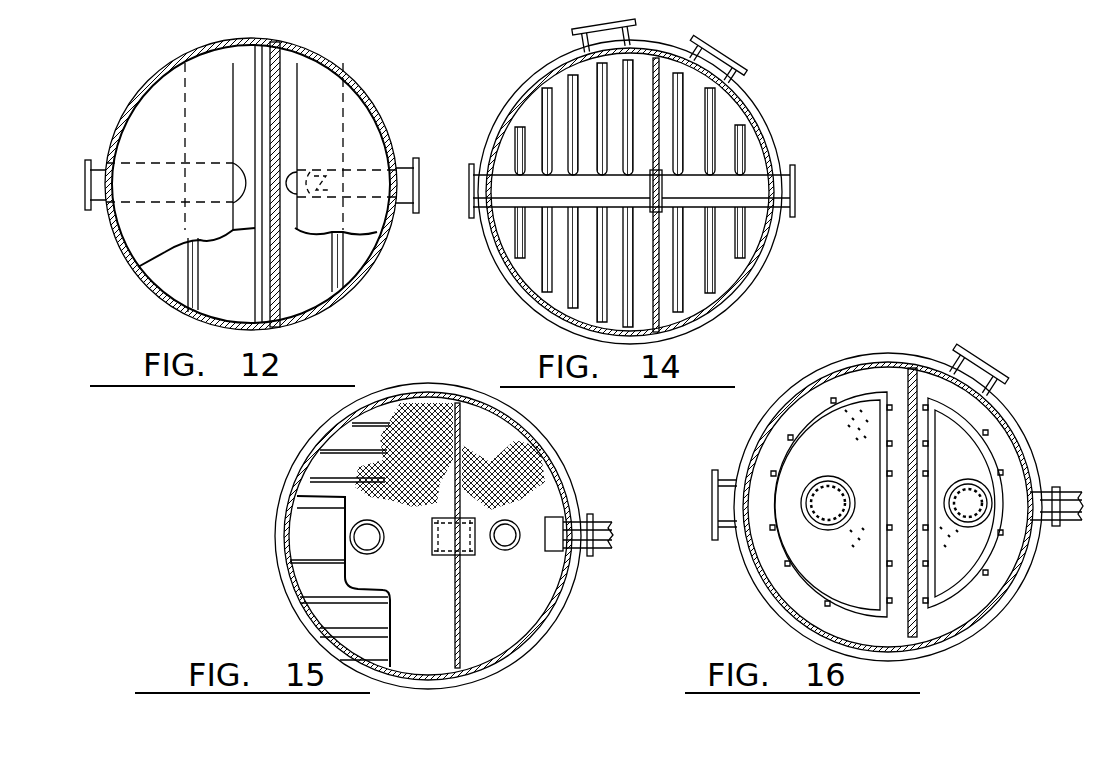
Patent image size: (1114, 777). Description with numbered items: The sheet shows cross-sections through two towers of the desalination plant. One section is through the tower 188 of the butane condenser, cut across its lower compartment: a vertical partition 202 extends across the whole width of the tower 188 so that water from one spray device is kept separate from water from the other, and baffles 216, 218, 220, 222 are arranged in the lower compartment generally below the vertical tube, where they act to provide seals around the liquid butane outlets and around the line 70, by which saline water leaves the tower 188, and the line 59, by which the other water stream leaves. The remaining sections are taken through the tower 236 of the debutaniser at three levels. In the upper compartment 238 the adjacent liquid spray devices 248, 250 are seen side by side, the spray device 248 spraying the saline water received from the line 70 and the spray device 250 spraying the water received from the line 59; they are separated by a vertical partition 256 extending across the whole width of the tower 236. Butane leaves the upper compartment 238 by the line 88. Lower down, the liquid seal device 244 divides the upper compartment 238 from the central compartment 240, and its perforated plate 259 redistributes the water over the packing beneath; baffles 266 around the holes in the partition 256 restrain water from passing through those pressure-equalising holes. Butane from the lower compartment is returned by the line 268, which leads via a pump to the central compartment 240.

In FIG. 12, the tower 188 is at (378, 105).
In FIG. 12, the vertical partition 202 is at (280, 97).
In FIG. 12, the baffle 216 is at (175, 135).
In FIG. 12, the baffle 218 is at (358, 145).
In FIG. 12, the baffle 220 is at (225, 285).
In FIG. 12, the baffle 222 is at (290, 275).
In FIG. 14, the tower 236 is at (740, 303).
In FIG. 15, the tower 236 is at (298, 452).
In FIG. 16, the tower 236 is at (750, 427).
In FIG. 14, the liquid spray device 248 is at (575, 115).
In FIG. 14, the vertical partition 256 is at (660, 115).
In FIG. 14, the liquid spray device 250 is at (730, 163).
In FIG. 14, the line 59 is at (775, 190).
In FIG. 14, the line 70 is at (480, 206).
In FIG. 14, the upper compartment 238 is at (765, 235).
In FIG. 15, the central compartment 240 is at (555, 598).
In FIG. 16, the central compartment 240 is at (770, 582).
In FIG. 15, the liquid seal device 244 is at (476, 633).
In FIG. 15, the baffle 266 is at (466, 540).
In FIG. 15, the line 88 is at (607, 549).
In FIG. 16, the perforated plate 259 is at (845, 576).
In FIG. 16, the line 268 is at (1058, 493).